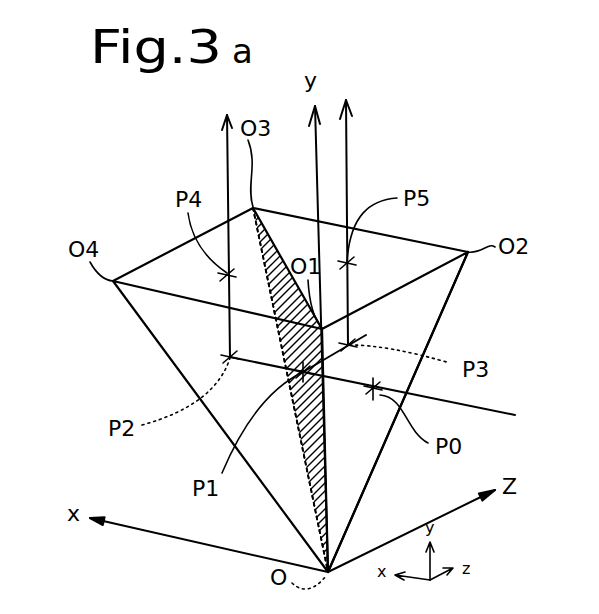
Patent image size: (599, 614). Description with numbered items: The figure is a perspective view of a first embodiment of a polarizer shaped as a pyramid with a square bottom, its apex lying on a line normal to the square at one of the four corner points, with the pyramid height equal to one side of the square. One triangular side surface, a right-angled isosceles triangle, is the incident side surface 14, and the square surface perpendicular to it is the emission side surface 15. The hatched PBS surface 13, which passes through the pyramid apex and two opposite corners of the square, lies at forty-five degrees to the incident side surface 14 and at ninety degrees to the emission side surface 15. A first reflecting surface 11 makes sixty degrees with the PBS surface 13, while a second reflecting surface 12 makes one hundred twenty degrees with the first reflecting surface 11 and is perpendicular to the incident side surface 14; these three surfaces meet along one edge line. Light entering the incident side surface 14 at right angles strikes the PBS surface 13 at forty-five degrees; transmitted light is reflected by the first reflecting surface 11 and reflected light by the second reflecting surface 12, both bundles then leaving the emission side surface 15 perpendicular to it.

The first reflecting surface 11 is at (162, 328).
The second reflecting surface 12 is at (440, 288).
The PBS surface 13 is at (268, 213).
The incident side surface 14 is at (415, 318).
The emission side surface 15 is at (175, 260).